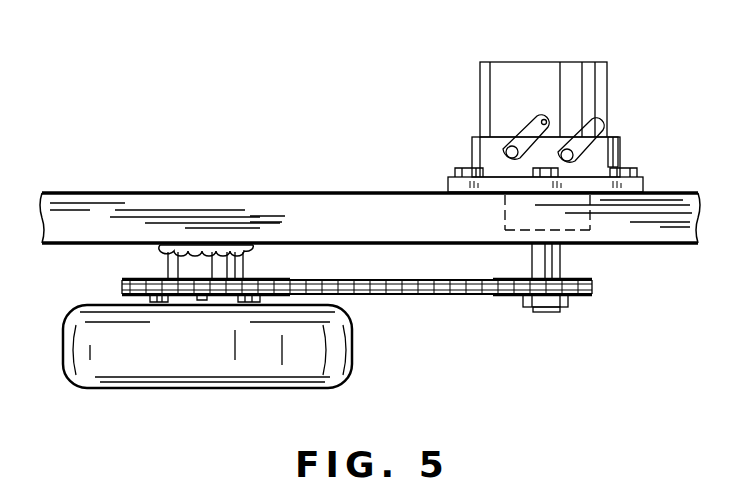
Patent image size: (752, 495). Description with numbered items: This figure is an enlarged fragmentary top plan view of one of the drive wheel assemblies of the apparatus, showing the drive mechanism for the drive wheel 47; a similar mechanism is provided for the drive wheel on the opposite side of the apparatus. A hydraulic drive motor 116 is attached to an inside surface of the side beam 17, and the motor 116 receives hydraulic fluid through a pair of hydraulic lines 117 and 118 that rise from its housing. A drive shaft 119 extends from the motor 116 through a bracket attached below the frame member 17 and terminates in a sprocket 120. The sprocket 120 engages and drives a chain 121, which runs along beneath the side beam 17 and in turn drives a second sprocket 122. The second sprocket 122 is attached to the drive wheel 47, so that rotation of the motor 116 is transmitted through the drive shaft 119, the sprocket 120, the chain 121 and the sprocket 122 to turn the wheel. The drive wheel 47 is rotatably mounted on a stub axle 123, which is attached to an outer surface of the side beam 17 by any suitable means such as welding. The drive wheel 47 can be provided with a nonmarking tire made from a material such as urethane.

The side beam 17 is at (140, 207).
The drive wheel 47 is at (92, 388).
The hydraulic drive motor 116 is at (605, 70).
The hydraulic line 117 is at (527, 137).
The hydraulic line 118 is at (607, 145).
The drive shaft 119 is at (552, 263).
The sprocket 120 is at (562, 297).
The chain 121 is at (400, 297).
The second sprocket 122 is at (200, 297).
The stub axle 123 is at (180, 263).